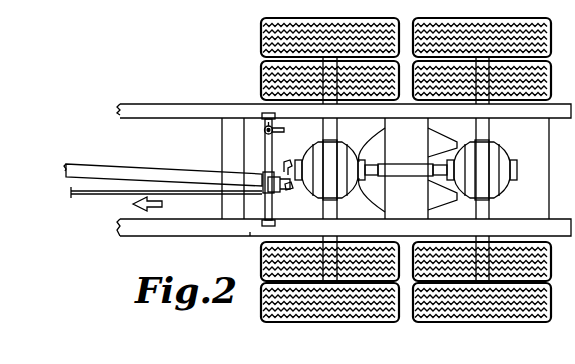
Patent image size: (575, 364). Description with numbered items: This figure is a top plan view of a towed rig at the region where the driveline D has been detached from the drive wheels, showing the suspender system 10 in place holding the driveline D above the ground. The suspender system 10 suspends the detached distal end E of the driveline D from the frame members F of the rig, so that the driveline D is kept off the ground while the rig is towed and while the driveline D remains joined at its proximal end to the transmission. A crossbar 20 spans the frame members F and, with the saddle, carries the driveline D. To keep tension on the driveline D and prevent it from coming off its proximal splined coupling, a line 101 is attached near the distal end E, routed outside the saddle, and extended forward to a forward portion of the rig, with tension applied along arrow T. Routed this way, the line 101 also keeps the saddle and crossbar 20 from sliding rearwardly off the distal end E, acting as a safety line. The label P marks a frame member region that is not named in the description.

The frame members F is at (152, 108).
The frame beam / platform P is at (253, 232).
The driveline D is at (101, 168).
The line 101 is at (88, 197).
The arrow T is at (153, 208).
The crossbar 20 is at (263, 153).
The suspender system 10 is at (258, 160).
The distal end E is at (286, 165).